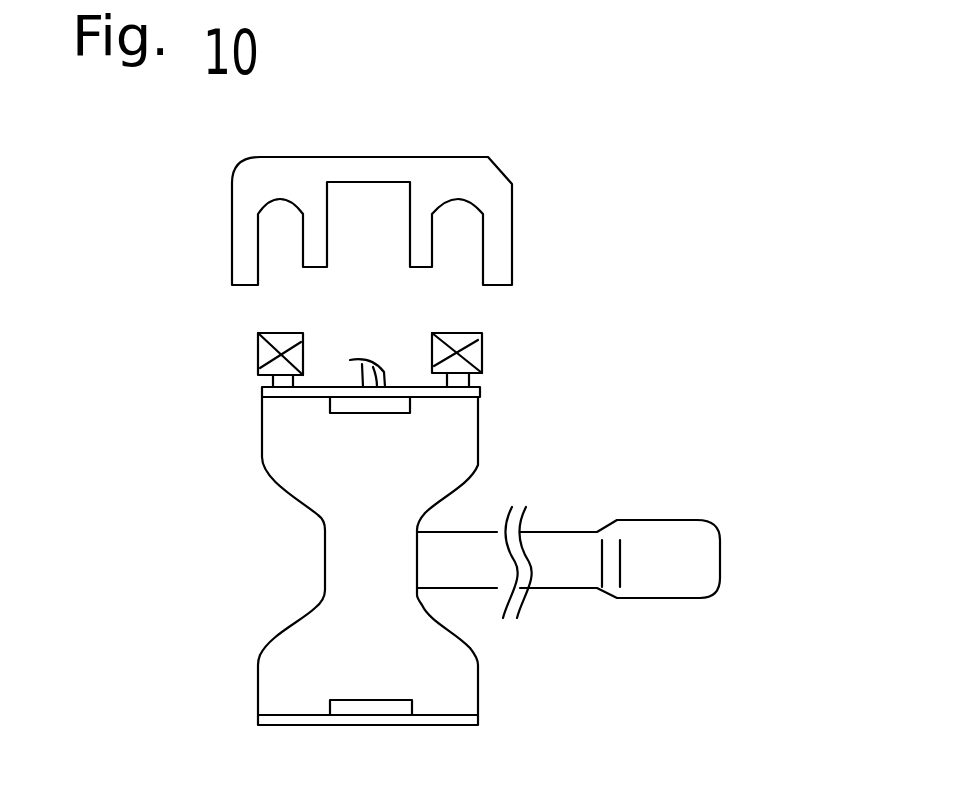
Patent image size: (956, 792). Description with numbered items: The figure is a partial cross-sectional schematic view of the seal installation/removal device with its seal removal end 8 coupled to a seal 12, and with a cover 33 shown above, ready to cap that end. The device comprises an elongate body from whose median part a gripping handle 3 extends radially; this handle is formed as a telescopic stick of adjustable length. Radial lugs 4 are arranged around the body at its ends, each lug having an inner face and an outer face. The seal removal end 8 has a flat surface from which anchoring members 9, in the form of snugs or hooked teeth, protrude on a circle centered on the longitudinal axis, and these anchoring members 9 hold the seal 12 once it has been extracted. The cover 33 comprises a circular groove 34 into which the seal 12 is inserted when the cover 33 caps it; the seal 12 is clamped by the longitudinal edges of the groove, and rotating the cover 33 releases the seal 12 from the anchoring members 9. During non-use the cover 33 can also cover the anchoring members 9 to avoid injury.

The gripping handle 3 is at (568, 570).
The lugs 4 is at (372, 407).
The seal removal end 8 is at (413, 382).
The anchoring members 9 is at (465, 382).
The seal 12 is at (458, 356).
The cover 33 is at (475, 182).
The bracket slot 34 is at (453, 255).